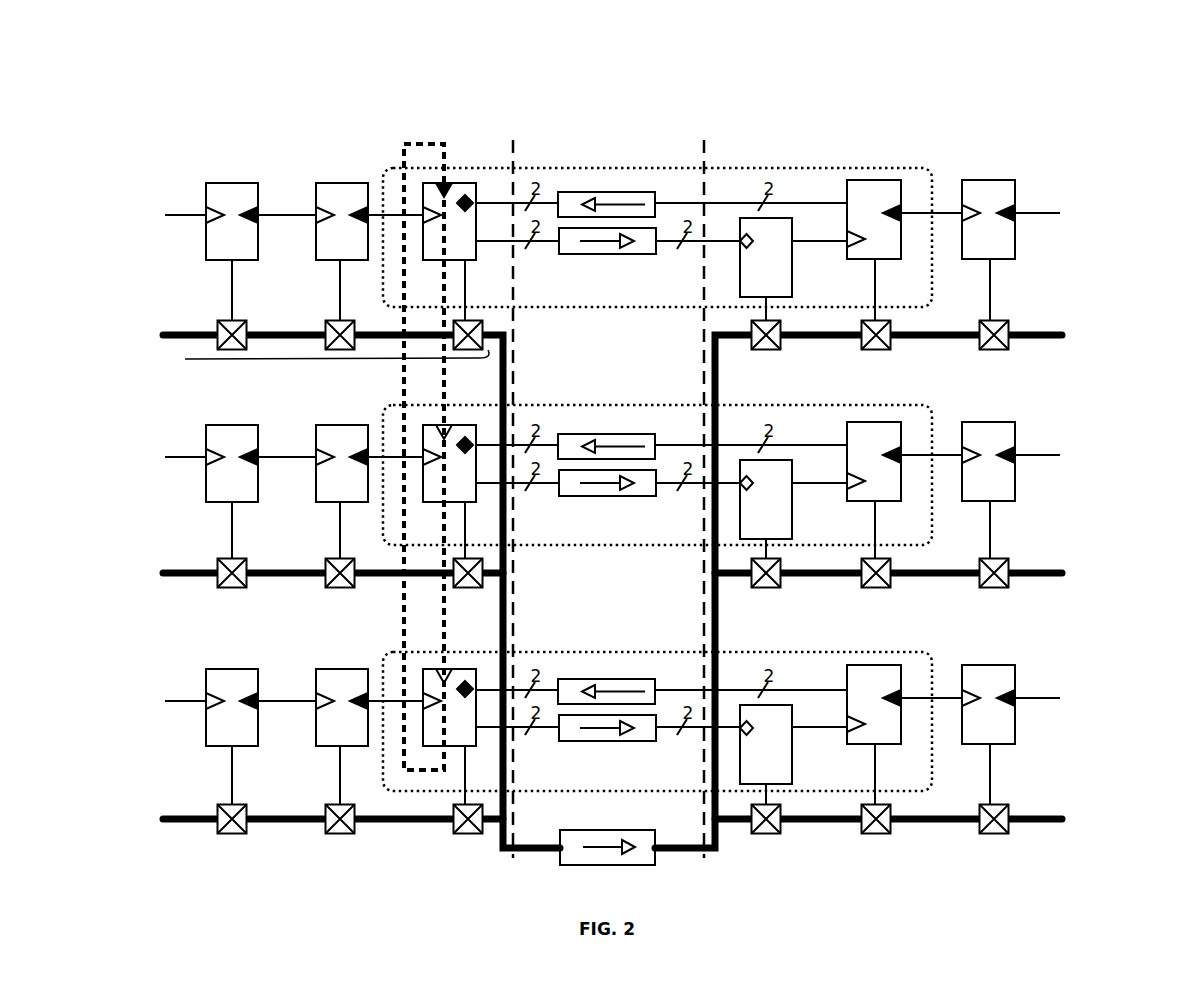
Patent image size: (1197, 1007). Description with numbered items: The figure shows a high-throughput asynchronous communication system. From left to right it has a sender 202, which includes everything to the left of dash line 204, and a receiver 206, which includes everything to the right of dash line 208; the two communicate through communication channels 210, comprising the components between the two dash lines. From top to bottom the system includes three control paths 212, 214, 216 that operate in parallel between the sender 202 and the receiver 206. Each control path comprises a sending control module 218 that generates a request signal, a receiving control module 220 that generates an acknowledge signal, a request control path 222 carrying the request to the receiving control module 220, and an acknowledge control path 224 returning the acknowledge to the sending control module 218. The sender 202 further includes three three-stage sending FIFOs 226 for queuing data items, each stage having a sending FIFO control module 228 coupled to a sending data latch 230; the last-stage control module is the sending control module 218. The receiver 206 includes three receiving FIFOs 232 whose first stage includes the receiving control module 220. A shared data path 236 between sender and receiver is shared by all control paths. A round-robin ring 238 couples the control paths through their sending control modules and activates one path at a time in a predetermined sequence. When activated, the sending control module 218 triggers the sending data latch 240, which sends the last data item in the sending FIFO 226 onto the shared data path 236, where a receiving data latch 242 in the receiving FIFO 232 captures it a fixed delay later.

The sender 202 is at (153, 105).
The dash line 204 is at (513, 140).
The receiver 206 is at (710, 105).
The dash line 208 is at (704, 140).
The communication channels 210 is at (702, 105).
The control path 212 is at (913, 167).
The control path 214 is at (912, 405).
The control path 216 is at (912, 651).
The sending control module 218 is at (440, 183).
The receiving control module 220 is at (850, 258).
The request control path 222 is at (582, 255).
The acknowledge control path 224 is at (617, 192).
The sending FIFO 226 is at (165, 352).
The sending FIFO control module 228 is at (330, 359).
The sending data latch 230 is at (354, 350).
The receiving FIFO 232 is at (1067, 352).
The shared data path 236 is at (597, 866).
The round-robin ring 238 is at (404, 143).
The sending data latch 240 is at (500, 358).
The receiving data latch 242 is at (770, 320).